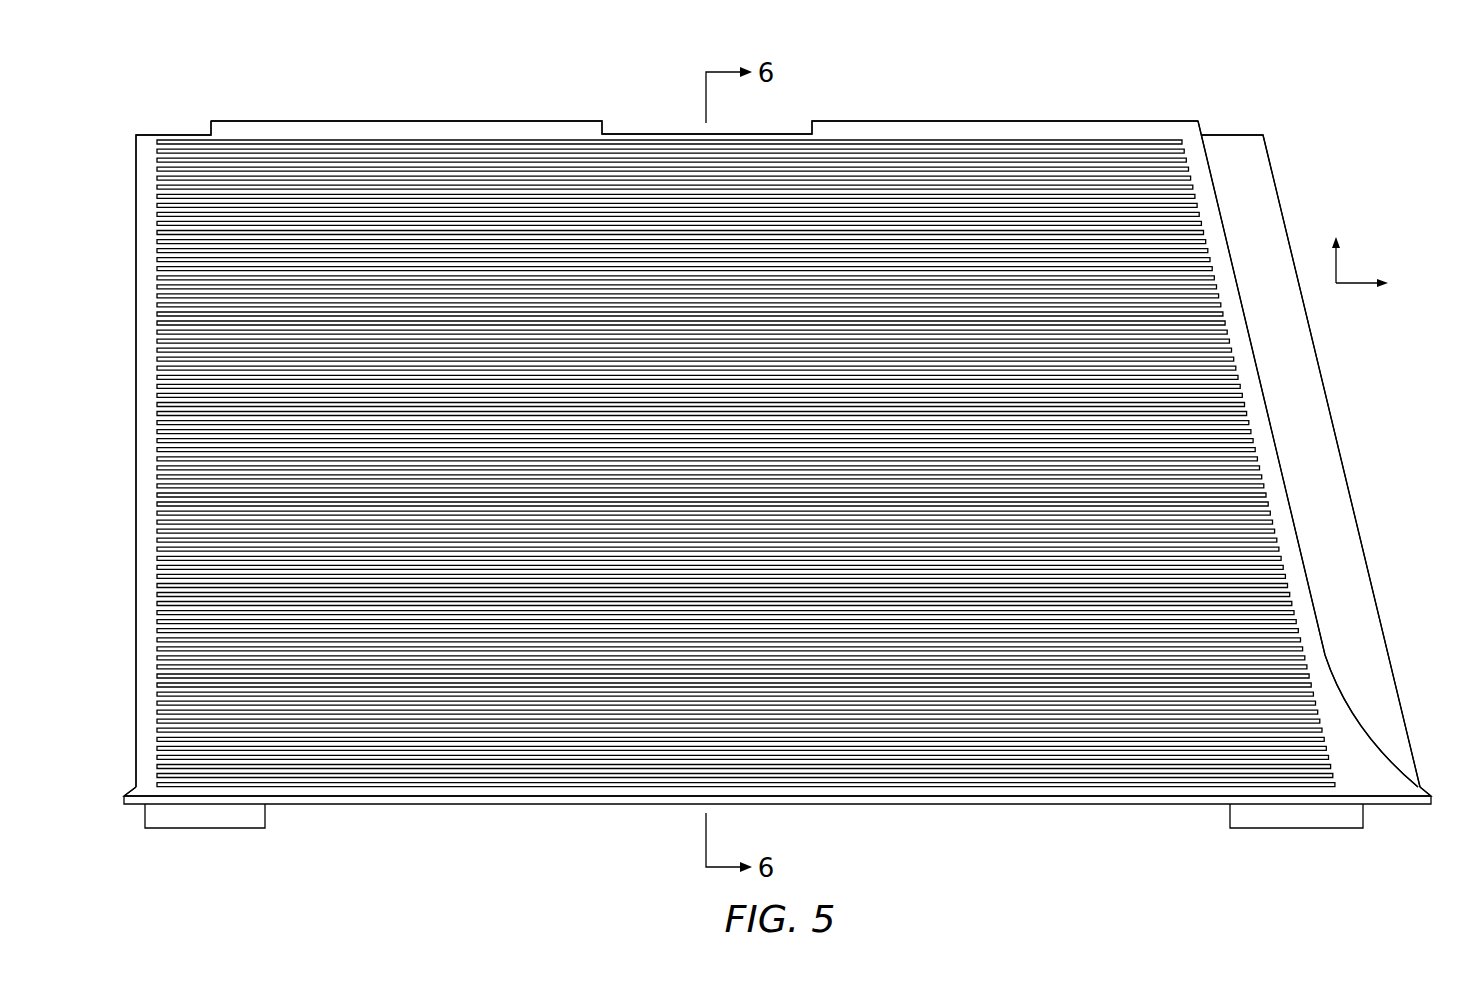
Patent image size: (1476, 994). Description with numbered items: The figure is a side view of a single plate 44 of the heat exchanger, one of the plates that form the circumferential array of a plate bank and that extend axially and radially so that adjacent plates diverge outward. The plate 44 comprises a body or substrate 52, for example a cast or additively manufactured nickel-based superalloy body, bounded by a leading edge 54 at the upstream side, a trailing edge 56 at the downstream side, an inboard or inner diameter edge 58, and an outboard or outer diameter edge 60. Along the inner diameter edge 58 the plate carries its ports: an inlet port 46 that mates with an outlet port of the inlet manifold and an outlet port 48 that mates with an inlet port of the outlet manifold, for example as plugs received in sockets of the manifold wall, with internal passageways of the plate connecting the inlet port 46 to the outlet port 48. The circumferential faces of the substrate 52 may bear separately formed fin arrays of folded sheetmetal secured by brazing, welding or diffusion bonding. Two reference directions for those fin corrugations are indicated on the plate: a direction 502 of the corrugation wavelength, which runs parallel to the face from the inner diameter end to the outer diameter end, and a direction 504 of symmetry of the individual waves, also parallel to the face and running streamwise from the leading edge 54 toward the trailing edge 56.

The plate 44 is at (880, 78).
The inlet port 46 is at (1268, 852).
The outlet port 48 is at (220, 852).
The body or substrate 52 is at (1201, 181).
The leading edge 54 is at (136, 156).
The trailing edge 56 is at (1292, 245).
The inboard or inner diameter (ID) edge 58 is at (514, 804).
The outboard or outer diameter (OD) edge 60 is at (967, 121).
The wavelength direction 502 is at (1336, 267).
The direction of symmetry 504 is at (1367, 288).